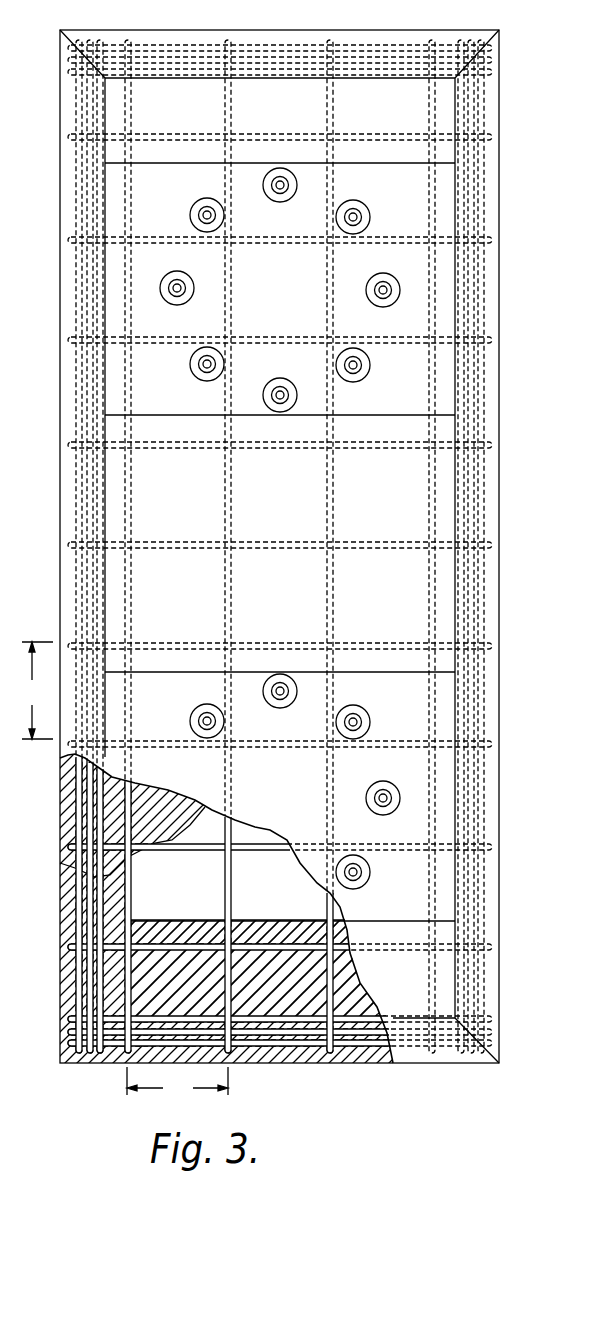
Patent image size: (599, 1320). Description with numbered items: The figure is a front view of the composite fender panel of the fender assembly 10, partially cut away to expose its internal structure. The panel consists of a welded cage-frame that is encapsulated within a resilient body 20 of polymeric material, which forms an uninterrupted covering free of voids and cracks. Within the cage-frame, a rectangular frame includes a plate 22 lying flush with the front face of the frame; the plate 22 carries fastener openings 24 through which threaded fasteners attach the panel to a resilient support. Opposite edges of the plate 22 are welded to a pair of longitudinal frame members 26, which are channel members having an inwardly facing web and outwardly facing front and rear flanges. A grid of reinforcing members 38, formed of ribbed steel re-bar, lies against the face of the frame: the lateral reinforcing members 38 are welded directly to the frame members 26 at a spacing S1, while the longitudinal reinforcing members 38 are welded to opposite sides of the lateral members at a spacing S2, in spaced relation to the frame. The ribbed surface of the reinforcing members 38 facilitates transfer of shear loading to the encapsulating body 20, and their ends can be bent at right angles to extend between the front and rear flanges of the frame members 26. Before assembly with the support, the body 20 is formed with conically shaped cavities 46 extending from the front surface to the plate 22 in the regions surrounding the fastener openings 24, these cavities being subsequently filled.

The fender assembly 10 is at (328, 1080).
The resilient body 20 is at (288, 984).
The plate 22 is at (289, 300).
The fastener openings 24 is at (353, 727).
The longitudinal frame members 26 is at (280, 546).
The reinforcing members 38 is at (153, 950).
The conically shaped cavities 46 is at (391, 805).
The spacing of lateral reinforcing members S1 is at (177, 1083).
The spacing of longitudinal reinforcing members S2 is at (36, 690).